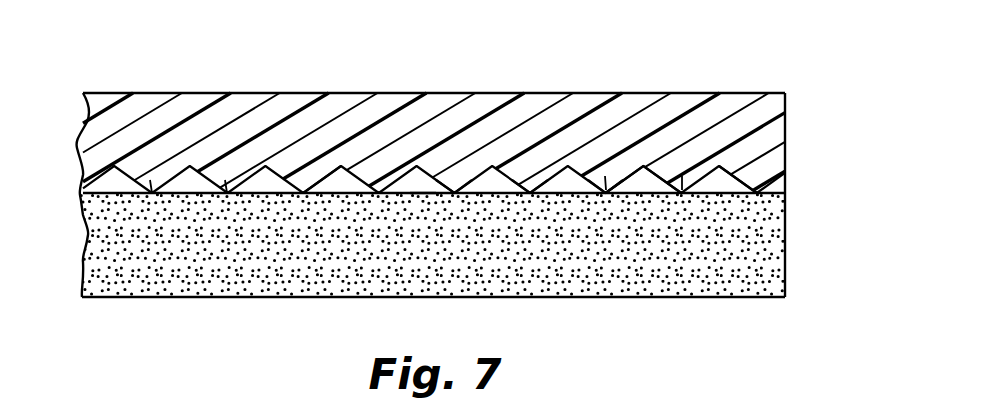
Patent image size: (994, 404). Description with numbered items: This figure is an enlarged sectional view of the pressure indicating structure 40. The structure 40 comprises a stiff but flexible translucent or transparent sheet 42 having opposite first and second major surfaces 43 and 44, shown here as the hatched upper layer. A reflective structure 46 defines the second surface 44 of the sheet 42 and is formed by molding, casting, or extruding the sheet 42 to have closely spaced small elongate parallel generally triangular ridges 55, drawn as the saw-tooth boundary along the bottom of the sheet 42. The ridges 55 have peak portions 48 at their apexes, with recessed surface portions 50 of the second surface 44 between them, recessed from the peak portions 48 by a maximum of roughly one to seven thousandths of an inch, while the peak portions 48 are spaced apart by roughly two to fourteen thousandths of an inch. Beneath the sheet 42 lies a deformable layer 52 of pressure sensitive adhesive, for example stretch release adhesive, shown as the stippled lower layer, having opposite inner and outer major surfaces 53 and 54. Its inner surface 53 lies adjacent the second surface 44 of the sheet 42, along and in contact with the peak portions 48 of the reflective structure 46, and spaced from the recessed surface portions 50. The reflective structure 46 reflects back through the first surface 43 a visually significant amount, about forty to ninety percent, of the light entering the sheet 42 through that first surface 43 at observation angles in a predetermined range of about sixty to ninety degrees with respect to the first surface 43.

The pressure indicating structure 40 is at (581, 46).
The sheet 42 is at (390, 93).
The first major surface 43 is at (150, 93).
The second major surface 44 is at (248, 180).
The reflective structure 46 is at (327, 180).
The peak portions 48 is at (453, 193).
The recessed surface portions 50 is at (726, 177).
The deformable layer 52 is at (772, 244).
The inner major surface 53 is at (423, 192).
The outer major surface 54 is at (728, 298).
The triangular ridges 55 is at (227, 180).